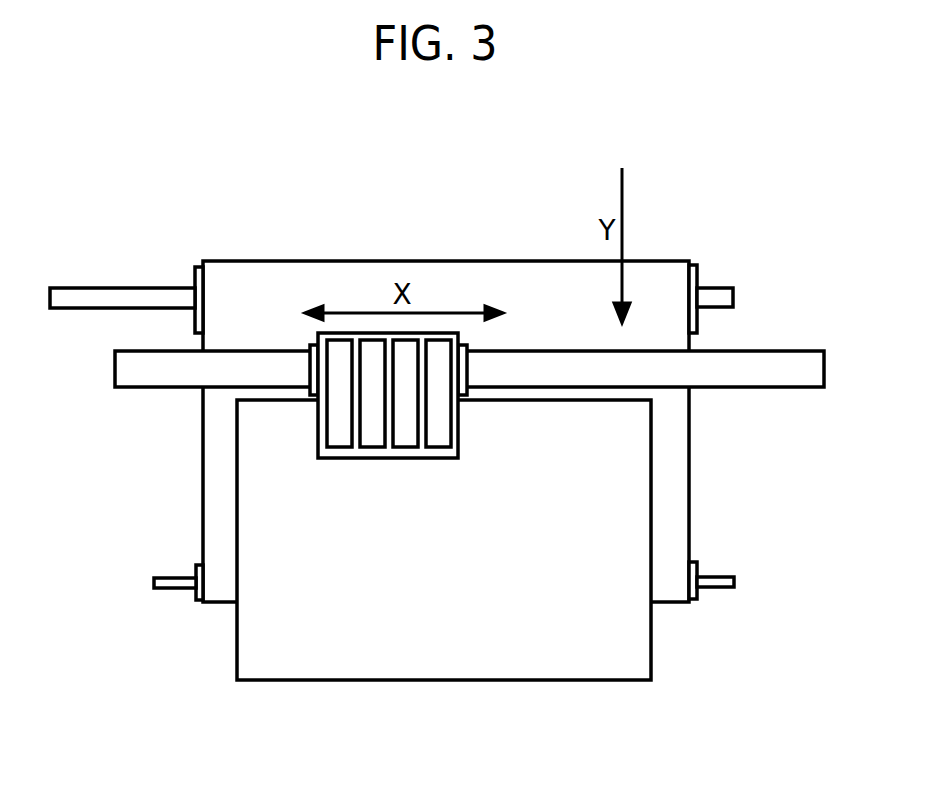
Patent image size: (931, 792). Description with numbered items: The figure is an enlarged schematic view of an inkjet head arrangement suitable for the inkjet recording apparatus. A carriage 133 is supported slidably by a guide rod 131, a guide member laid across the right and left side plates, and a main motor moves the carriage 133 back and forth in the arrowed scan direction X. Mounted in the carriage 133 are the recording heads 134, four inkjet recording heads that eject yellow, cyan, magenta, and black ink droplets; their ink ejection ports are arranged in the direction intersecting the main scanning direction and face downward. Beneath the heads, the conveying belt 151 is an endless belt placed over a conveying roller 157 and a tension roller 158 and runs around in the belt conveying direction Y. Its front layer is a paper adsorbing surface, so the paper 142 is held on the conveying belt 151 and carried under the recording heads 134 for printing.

The guide rod 131 is at (787, 360).
The carriage 133 is at (328, 454).
The recording heads 134 is at (340, 440).
The paper 142 is at (342, 672).
The conveying belt 151 is at (250, 272).
The conveying roller 157 is at (196, 268).
The tension roller 158 is at (196, 570).